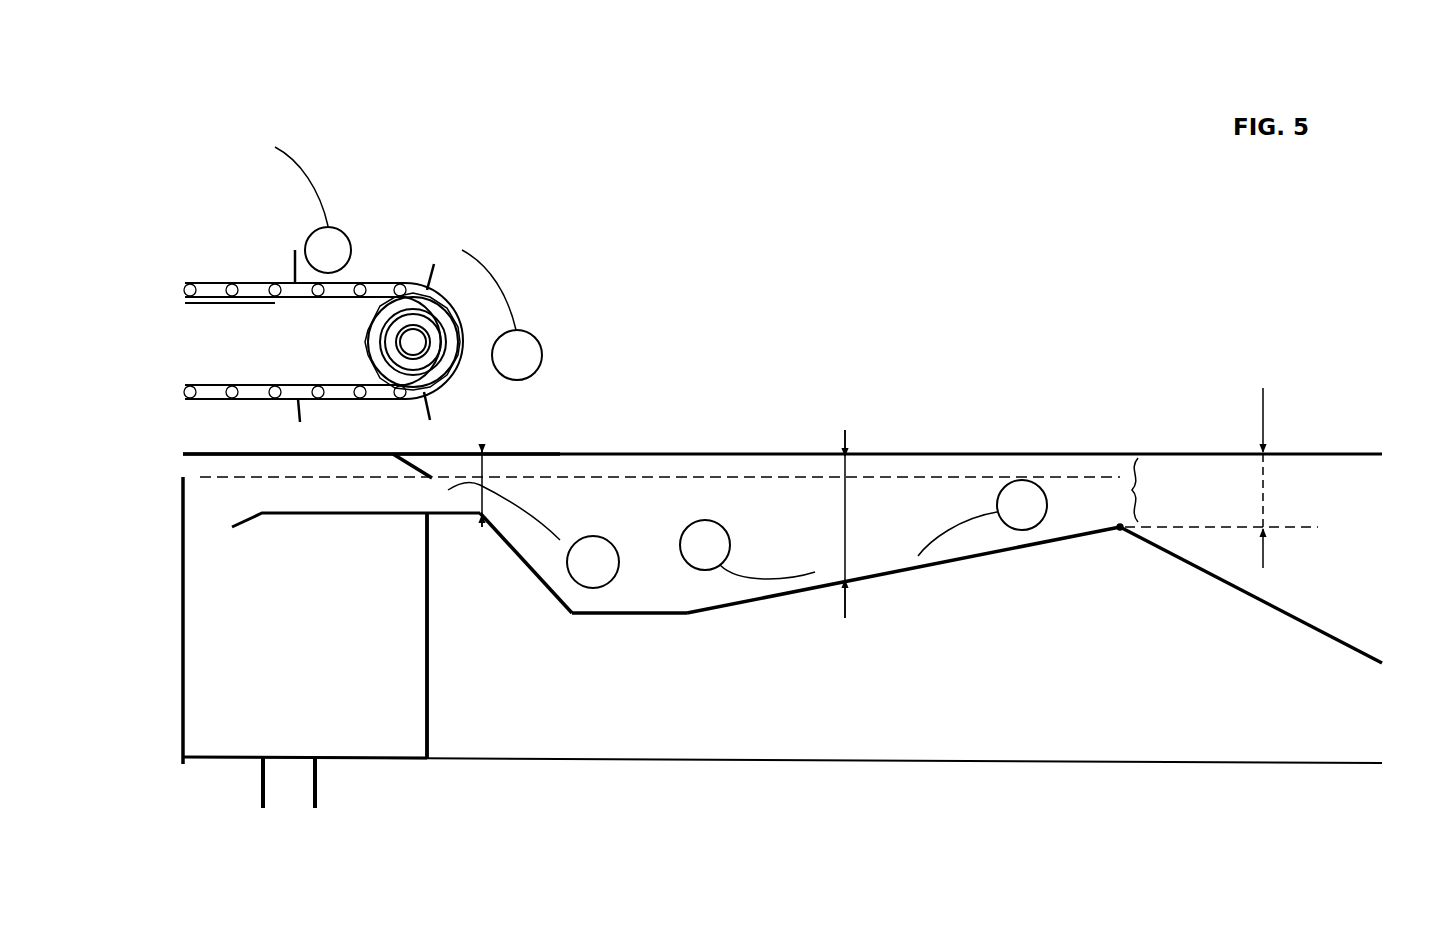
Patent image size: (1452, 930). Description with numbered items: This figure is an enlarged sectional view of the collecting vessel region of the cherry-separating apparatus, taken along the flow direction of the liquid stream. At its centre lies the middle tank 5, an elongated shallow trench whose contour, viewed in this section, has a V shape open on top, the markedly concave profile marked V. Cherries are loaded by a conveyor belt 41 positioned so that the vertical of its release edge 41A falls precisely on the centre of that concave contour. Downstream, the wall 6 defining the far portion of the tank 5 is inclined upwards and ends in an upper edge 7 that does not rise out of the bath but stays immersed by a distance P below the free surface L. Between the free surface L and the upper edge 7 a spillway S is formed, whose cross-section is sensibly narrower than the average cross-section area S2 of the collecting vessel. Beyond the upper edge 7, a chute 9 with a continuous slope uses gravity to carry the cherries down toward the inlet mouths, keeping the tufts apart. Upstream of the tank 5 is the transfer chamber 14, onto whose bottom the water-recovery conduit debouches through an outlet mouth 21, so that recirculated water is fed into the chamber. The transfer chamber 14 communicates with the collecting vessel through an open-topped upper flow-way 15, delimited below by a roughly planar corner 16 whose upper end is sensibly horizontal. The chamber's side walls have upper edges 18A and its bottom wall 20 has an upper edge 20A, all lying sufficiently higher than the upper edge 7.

The middle tank 5 is at (528, 576).
The wall 6 is at (753, 611).
The upper edge 7 is at (1117, 518).
The chute 9 is at (1302, 618).
The transfer chamber 14 is at (363, 686).
The upper flow-way 15 is at (476, 496).
The corner 16 is at (443, 505).
The upper edge of side wall 18A is at (356, 442).
The bottom wall 20 is at (180, 540).
The upper edge of bottom wall 20A is at (180, 468).
The outlet mouth 21 is at (295, 751).
The conveyor belt 41 is at (219, 278).
The release edge 41A is at (464, 311).
The free surface L is at (1306, 448).
The V shape V is at (704, 616).
The spillway S is at (1148, 490).
The average cross-section area S2 is at (880, 578).
The distance P is at (1221, 478).